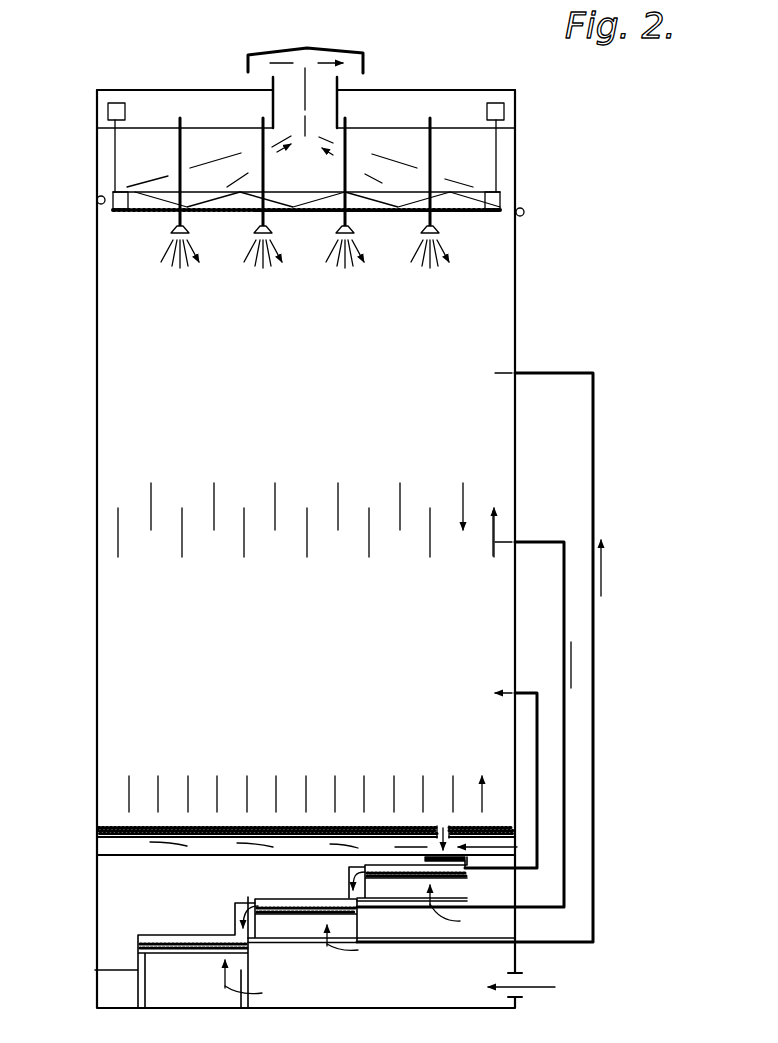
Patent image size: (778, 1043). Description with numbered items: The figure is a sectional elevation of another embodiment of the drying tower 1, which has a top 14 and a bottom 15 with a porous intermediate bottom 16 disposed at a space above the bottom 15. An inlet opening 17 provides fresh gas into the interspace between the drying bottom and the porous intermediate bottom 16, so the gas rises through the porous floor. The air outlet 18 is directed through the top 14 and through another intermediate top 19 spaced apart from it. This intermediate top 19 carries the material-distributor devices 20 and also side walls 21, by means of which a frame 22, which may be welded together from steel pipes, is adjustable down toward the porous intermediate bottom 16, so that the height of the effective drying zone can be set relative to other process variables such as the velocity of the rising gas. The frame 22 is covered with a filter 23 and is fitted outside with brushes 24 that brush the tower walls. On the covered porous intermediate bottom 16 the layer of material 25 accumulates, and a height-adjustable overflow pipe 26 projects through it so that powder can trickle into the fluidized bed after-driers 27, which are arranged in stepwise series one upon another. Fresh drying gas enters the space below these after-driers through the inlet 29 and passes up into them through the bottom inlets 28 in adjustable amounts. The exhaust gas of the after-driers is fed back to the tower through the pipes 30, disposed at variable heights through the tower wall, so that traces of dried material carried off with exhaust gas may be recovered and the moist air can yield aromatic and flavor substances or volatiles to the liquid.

The drying tower 1 is at (122, 320).
The top 14 is at (190, 90).
The bottom 15 is at (115, 848).
The porous intermediate bottom 16 is at (115, 830).
The inlet opening 17 is at (518, 854).
The air outlet 18 is at (322, 80).
The intermediate top 19 is at (492, 128).
The material-distributor devices 20 is at (424, 231).
The side walls 21 is at (115, 150).
The frame 22 is at (118, 205).
The filter 23 is at (485, 214).
The brushes 24 is at (104, 199).
The layer of material 25 is at (515, 837).
The overflow pipe 26 is at (441, 827).
The fluidized bed after-driers 27 is at (183, 964).
The bottom inlets 28 is at (225, 988).
The inlet 29 is at (518, 995).
The pipes 30 is at (540, 717).